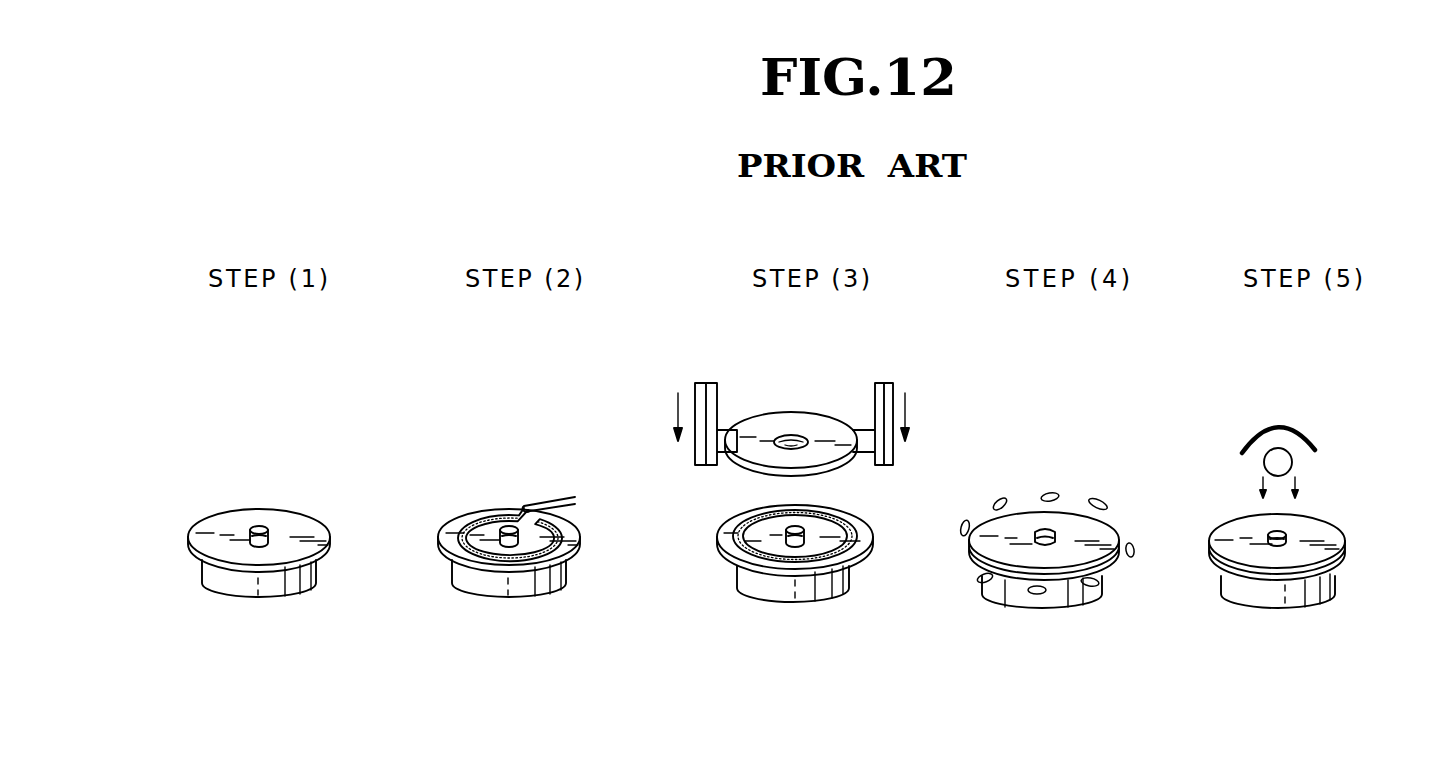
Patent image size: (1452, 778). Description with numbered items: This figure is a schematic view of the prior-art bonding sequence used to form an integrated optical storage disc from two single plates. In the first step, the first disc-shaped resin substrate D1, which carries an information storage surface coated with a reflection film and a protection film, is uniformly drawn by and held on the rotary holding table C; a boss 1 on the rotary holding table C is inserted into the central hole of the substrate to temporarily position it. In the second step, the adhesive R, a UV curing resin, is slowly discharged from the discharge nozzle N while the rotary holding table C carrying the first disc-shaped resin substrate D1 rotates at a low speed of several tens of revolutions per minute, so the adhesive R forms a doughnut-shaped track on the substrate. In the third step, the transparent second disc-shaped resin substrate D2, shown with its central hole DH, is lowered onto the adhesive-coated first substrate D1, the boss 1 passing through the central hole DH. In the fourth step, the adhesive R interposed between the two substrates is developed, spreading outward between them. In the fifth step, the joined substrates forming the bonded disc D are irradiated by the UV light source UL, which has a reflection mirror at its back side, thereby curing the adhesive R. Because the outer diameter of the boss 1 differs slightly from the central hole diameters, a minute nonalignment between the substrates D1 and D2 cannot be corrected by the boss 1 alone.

The boss 1 is at (257, 526).
The first disc-shaped resin substrate D1 is at (306, 517).
The second disc-shaped resin substrate D2 is at (820, 413).
The rotary holding table C is at (275, 593).
The adhesive R is at (477, 515).
The discharge nozzle N is at (543, 500).
The disk hole DH is at (790, 439).
The assembled disk D is at (1340, 531).
The UV light source UL is at (1293, 462).